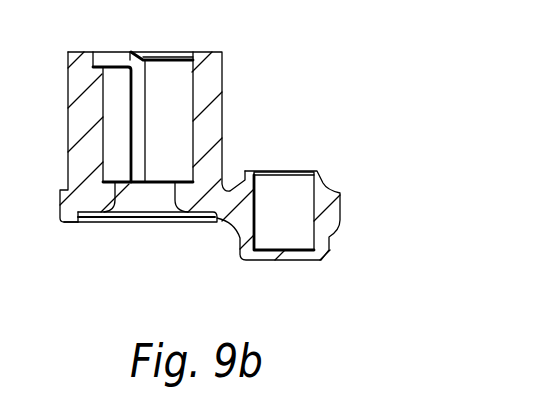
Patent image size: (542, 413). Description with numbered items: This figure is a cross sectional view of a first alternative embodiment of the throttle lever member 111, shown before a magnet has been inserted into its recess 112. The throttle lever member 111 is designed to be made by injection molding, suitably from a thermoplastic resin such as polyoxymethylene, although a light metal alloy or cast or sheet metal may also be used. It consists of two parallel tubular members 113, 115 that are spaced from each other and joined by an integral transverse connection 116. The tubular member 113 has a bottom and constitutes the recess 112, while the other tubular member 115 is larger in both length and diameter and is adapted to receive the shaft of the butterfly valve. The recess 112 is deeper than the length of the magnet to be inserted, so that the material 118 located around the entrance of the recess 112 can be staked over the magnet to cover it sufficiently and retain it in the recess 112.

The throttle lever member 111 is at (103, 222).
The recess 112 is at (272, 193).
The tubular member 113 is at (325, 238).
The tubular member 115 is at (211, 80).
The integral transverse connection 116 is at (334, 212).
The material located around the entrance of the recess 118 is at (318, 172).